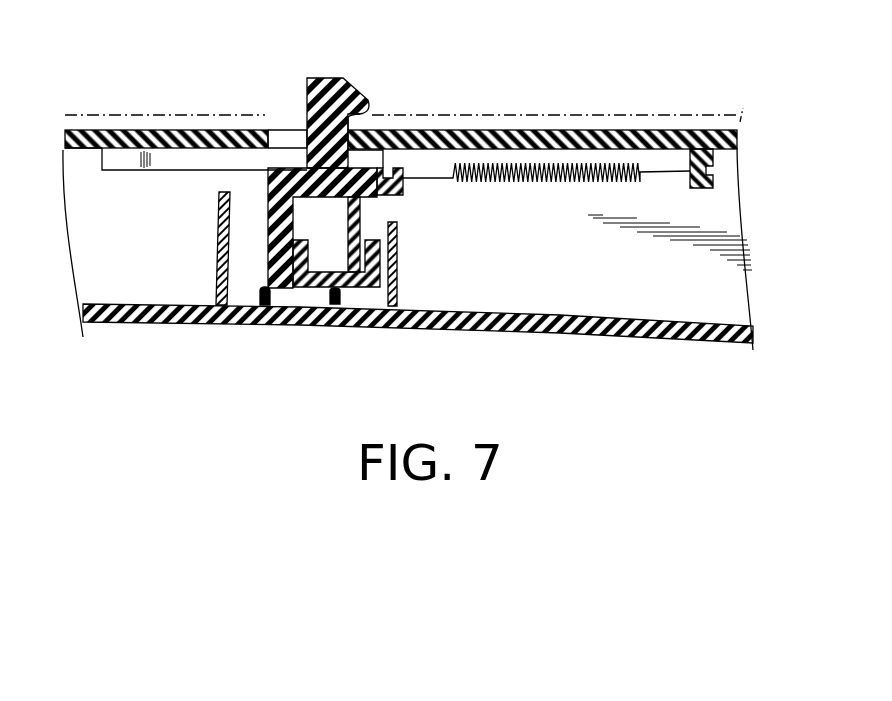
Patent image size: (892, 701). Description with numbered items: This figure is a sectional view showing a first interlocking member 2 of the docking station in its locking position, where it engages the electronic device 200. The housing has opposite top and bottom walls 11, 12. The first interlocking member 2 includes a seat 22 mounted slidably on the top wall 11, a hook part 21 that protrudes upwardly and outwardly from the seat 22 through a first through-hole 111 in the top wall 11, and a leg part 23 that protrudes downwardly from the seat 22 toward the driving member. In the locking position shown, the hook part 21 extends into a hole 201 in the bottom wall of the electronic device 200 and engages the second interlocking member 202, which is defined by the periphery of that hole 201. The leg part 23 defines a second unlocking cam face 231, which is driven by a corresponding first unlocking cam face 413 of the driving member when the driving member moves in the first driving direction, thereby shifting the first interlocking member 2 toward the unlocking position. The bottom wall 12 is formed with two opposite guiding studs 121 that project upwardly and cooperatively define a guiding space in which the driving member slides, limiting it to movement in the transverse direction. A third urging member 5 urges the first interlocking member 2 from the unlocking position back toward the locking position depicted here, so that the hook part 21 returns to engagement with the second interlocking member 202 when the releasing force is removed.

The first interlocking member 2 is at (370, 75).
The third urging member 5 is at (563, 180).
The top wall 11 is at (738, 146).
The bottom wall 12 is at (760, 334).
The hook part 21 is at (322, 77).
The seat 22 is at (363, 203).
The leg part 23 is at (217, 307).
The first through-hole 111 is at (278, 140).
The guiding stud 121 is at (217, 257).
The electronic device 200 is at (636, 118).
The hole 201 is at (292, 120).
The second interlocking member 202 is at (392, 112).
The second unlocking cam face 231 is at (320, 287).
The first unlocking cam face 413 is at (293, 288).